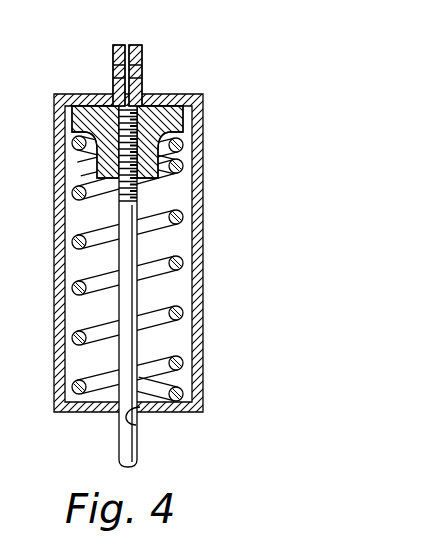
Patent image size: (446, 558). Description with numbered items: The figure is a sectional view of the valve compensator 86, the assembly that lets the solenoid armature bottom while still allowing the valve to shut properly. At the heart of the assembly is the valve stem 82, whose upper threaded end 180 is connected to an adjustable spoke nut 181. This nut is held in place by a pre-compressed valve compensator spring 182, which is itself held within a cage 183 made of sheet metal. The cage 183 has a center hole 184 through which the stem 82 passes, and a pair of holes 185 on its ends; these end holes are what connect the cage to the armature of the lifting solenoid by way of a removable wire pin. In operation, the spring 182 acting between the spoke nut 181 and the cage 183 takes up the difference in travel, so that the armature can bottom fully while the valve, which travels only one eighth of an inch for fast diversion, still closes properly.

The compensator 86 is at (220, 229).
The valve stem 82 is at (193, 293).
The upper threaded end 180 is at (118, 196).
The adjustable spoke nut 181 is at (185, 121).
The valve compensator spring 182 is at (183, 268).
The cage 183 is at (203, 335).
The center hole 184 is at (136, 425).
The holes 185 is at (140, 67).